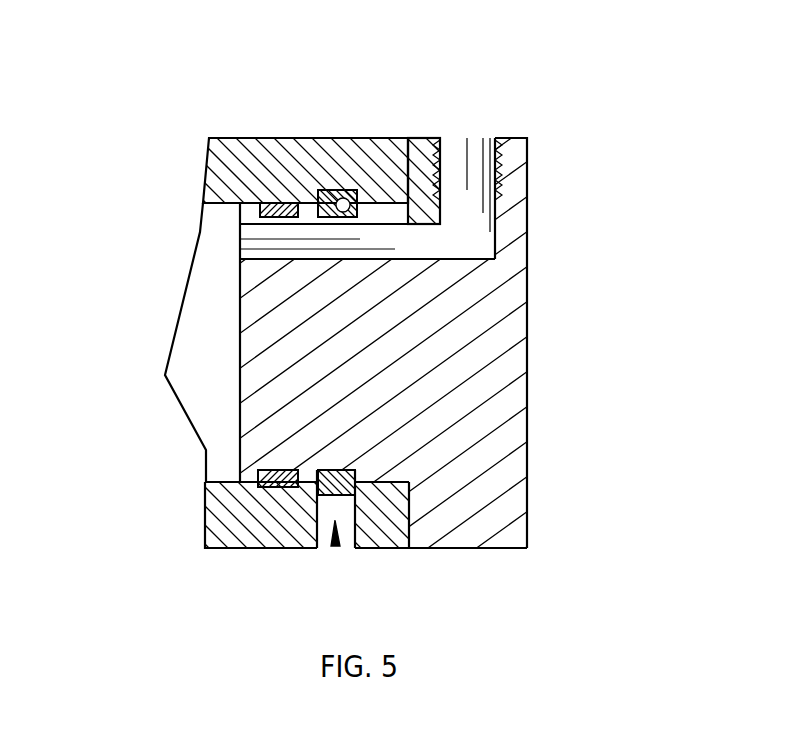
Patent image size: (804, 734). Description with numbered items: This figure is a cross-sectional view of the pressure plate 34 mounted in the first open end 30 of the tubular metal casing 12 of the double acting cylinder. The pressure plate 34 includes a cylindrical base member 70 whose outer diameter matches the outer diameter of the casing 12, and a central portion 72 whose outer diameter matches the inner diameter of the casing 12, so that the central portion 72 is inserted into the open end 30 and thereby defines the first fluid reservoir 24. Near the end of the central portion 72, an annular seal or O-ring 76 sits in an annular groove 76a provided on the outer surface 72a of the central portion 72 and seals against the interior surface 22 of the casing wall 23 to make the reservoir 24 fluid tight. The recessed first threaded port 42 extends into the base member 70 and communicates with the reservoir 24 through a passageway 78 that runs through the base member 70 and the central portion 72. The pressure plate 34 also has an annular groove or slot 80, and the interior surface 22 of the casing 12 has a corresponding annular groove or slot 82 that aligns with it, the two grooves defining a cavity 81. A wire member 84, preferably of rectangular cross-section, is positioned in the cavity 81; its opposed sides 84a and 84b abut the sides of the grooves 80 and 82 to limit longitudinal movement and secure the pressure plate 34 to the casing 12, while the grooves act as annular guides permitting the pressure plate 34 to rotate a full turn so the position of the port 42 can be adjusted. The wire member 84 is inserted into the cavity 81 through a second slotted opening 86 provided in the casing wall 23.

The casing 12 is at (242, 128).
The interior surface 22 is at (212, 220).
The casing wall 23 is at (300, 163).
The first fluid reservoir 24 is at (203, 295).
The first open end 30 is at (438, 137).
The pressure plate 34 is at (527, 288).
The first threaded port 42 is at (476, 128).
The cylindrical base member 70 is at (515, 532).
The central portion 72 is at (262, 384).
The outer surface 72a is at (248, 202).
The annular seal or O-ring 76 is at (268, 488).
The annular groove 76a is at (300, 470).
The passageway 78 is at (455, 235).
The annular groove or slot 80 is at (357, 207).
The cavity 81 is at (337, 546).
The annular groove or slot 82 is at (338, 192).
The wire member 84 is at (358, 473).
The opposed side 84a is at (313, 485).
The opposed side 84b is at (358, 486).
The second slotted opening 86 is at (328, 528).